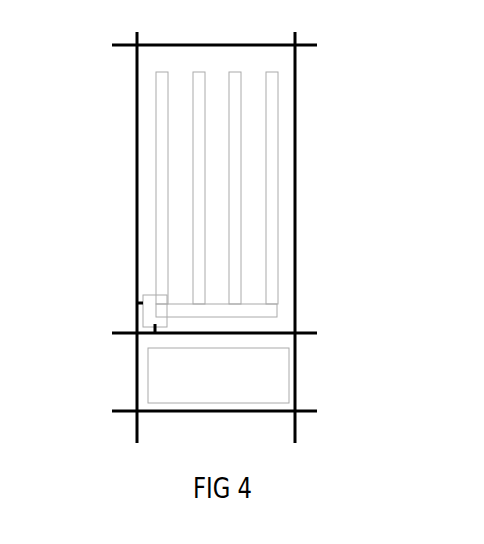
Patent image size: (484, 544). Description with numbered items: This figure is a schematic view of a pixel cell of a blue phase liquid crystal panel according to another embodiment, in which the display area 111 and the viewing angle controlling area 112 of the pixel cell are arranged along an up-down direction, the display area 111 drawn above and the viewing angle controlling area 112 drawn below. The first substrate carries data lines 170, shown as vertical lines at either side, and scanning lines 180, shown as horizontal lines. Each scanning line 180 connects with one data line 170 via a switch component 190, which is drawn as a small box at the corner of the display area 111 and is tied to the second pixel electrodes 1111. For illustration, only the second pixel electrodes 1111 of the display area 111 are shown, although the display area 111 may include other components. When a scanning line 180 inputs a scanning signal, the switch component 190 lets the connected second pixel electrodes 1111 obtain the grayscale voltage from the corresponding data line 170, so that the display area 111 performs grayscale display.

The data line 170 is at (138, 142).
The scanning line 180 is at (122, 333).
The display area 111 is at (288, 182).
The second pixel electrode 1111 is at (272, 310).
The switch component 190 is at (153, 295).
The viewing angle controlling area 112 is at (289, 380).